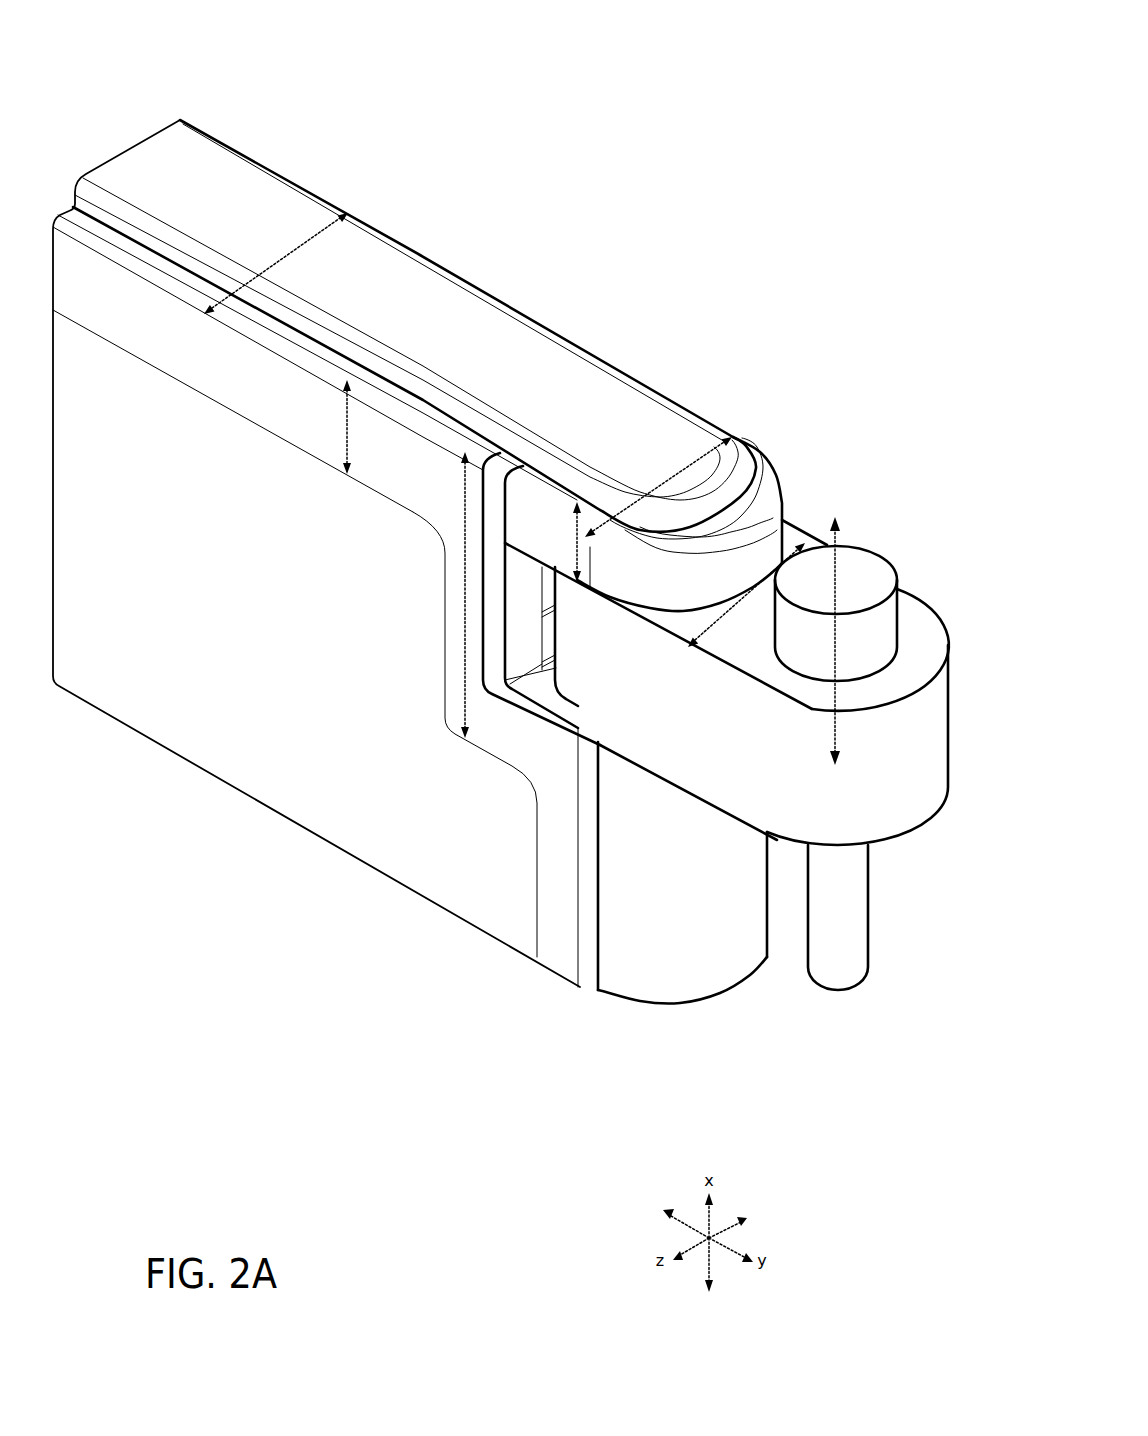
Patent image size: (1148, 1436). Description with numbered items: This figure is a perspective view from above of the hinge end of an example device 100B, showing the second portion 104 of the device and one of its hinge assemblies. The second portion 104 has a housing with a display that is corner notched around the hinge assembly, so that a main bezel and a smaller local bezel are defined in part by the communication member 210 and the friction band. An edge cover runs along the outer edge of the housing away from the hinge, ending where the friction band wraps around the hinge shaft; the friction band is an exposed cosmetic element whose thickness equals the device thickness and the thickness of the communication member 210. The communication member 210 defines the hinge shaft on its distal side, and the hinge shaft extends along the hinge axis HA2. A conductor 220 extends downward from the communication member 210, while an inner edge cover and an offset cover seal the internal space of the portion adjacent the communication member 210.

The device 100B is at (501, 541).
The second portion 104 is at (272, 822).
The communication member 210 is at (727, 694).
The conductor 220 is at (815, 990).
The hinge axis HA2 is at (835, 629).